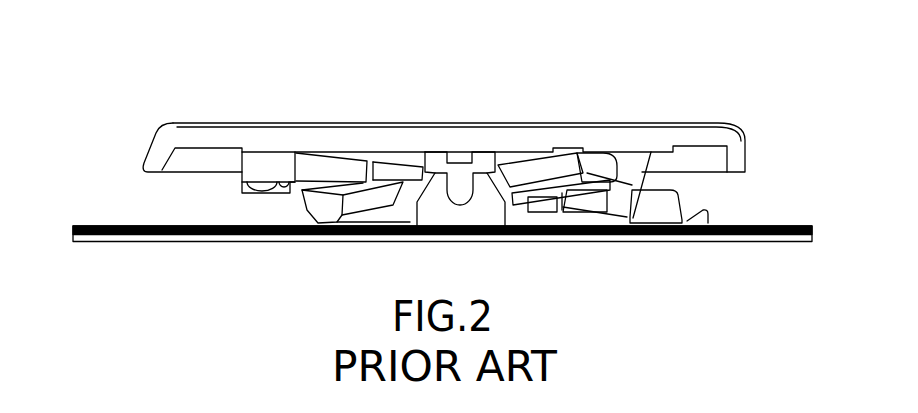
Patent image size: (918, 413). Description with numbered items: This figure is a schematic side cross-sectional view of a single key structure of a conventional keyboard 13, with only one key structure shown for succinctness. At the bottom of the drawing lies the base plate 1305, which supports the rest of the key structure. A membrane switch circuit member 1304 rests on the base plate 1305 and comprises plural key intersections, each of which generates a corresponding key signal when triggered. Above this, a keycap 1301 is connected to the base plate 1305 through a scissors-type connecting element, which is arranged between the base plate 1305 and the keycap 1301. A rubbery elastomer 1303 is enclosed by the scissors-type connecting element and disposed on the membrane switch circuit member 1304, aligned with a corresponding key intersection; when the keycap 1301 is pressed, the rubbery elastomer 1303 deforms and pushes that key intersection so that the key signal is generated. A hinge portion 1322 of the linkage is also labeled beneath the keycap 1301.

The keyboard 13 is at (676, 66).
The keycap 1301 is at (400, 135).
The rubbery elastomer 1303 is at (487, 187).
The hinge block 1322 is at (268, 163).
The membrane switch circuit member 1304 is at (722, 236).
The base plate 1305 is at (625, 236).